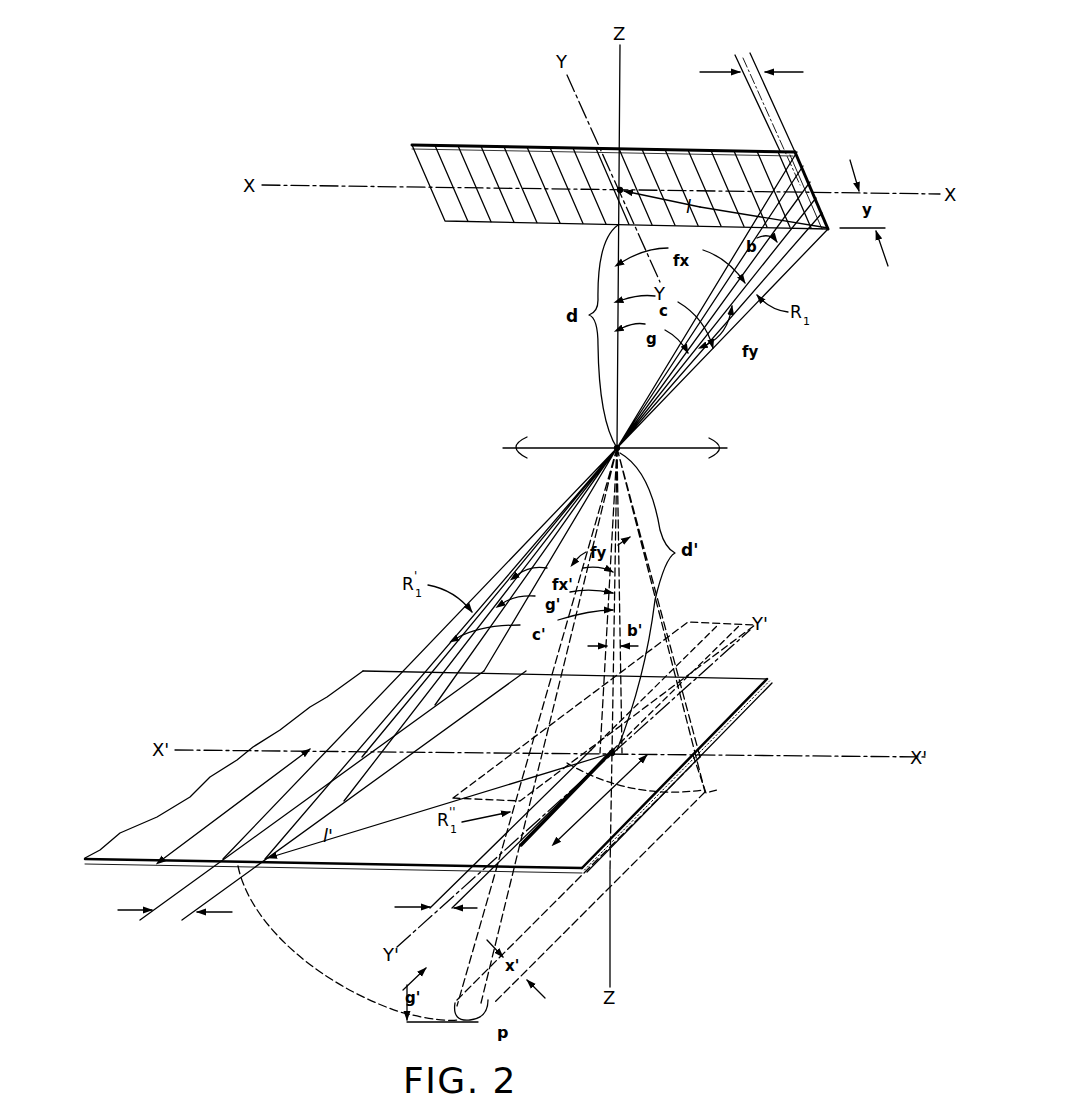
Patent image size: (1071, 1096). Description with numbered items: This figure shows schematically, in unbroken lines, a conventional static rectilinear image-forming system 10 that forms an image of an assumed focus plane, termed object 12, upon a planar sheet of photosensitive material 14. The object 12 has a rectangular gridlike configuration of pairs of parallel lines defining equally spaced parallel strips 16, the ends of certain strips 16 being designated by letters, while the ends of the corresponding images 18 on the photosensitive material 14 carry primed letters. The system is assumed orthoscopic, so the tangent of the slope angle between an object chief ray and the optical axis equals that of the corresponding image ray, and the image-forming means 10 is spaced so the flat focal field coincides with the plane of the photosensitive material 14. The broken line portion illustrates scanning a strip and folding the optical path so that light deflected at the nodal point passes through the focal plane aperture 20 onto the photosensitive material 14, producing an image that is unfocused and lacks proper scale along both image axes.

The image-forming system 10 is at (528, 403).
The object 12 is at (486, 100).
The photosensitive material 14 is at (755, 682).
The strips 16 is at (745, 158).
The images of the object strips 18 is at (283, 828).
The focal plane aperture 20 is at (682, 641).